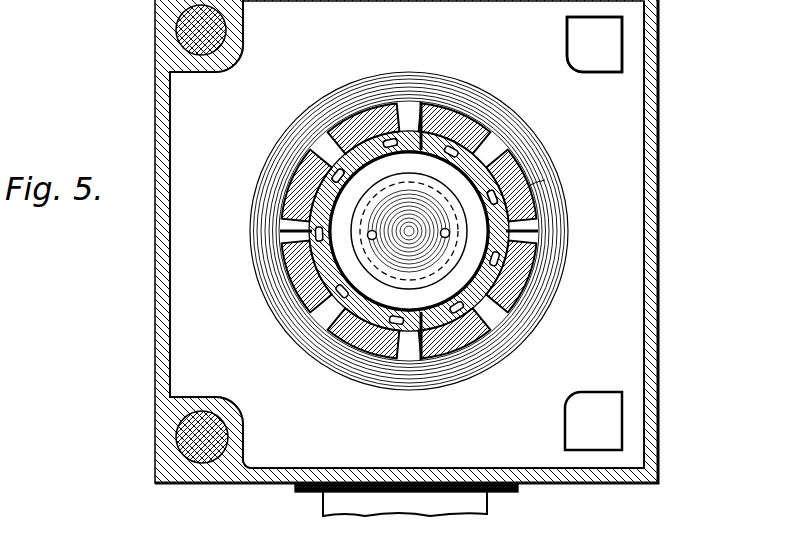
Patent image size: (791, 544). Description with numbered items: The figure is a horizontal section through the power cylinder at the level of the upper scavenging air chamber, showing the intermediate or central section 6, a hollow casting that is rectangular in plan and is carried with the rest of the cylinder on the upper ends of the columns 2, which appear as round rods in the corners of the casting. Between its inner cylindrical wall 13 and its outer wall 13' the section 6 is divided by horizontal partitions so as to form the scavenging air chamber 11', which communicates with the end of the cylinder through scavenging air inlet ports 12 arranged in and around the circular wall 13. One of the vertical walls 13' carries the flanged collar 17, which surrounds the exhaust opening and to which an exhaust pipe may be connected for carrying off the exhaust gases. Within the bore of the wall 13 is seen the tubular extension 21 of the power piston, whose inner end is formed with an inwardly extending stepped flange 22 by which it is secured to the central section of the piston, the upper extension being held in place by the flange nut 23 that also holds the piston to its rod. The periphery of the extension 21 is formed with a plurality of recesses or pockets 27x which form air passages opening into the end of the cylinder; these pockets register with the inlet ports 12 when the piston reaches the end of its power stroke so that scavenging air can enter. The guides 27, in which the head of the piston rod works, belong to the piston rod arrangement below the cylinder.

The column 2 is at (182, 33).
The intermediate or central section 6 is at (385, 241).
The scavenging air chamber 11' is at (444, 233).
The scavenging air inlet port 12 is at (421, 120).
The inner cylindrical wall 13 is at (402, 231).
The outer wall 13' is at (404, 245).
The flanged collar 17 is at (489, 502).
The tubular extension 21 is at (503, 303).
The stepped flange 22 is at (534, 186).
The flange nut 23 is at (409, 231).
The recess or pocket 27x is at (497, 172).
The guide 27 is at (497, 172).